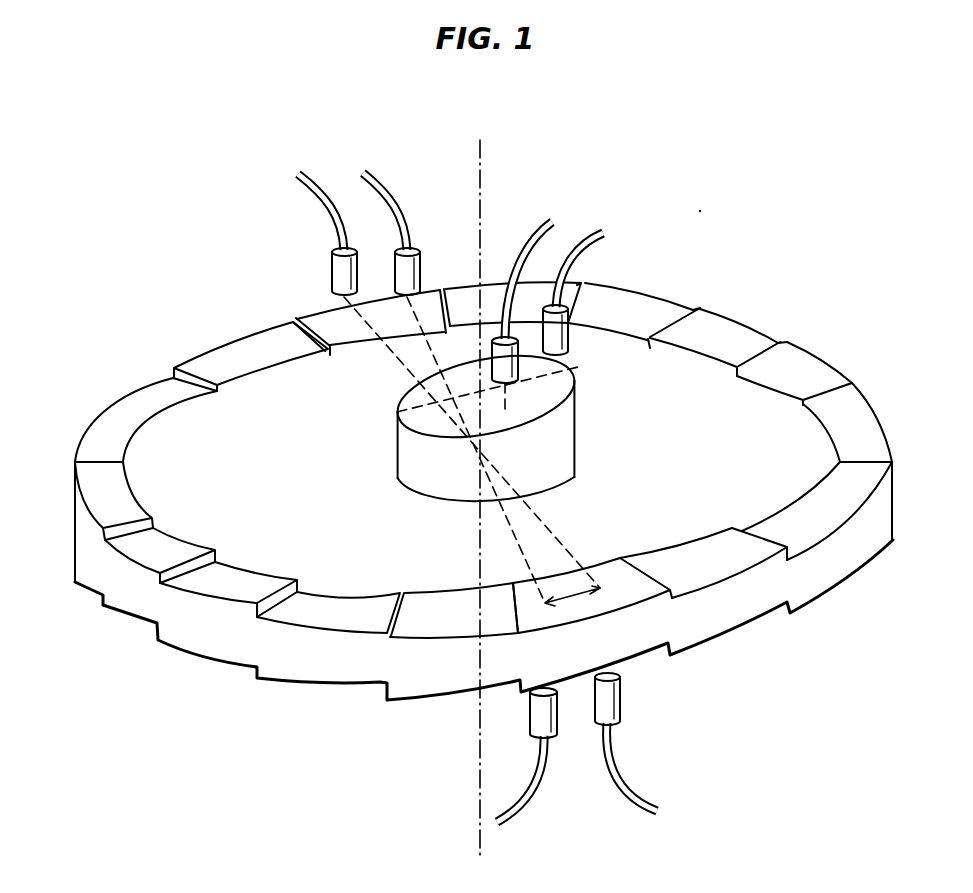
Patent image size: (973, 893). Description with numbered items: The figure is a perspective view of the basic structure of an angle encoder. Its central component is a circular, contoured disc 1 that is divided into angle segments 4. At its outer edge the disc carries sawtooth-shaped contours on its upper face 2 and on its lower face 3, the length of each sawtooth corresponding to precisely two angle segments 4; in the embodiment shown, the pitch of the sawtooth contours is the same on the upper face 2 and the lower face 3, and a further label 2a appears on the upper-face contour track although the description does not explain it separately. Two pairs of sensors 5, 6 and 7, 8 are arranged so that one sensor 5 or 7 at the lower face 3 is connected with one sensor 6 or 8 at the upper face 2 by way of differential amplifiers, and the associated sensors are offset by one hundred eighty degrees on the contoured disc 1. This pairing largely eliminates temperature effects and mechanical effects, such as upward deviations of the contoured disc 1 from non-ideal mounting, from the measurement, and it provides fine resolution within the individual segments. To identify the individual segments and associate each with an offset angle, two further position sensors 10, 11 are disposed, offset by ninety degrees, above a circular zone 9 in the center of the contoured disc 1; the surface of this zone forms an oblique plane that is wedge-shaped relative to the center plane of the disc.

The contoured disc 1 is at (866, 517).
The upper face 2 is at (587, 606).
The ring segment 2a is at (173, 378).
The lower face 3 is at (647, 655).
The angle segment 4 is at (585, 592).
The sensor 5 is at (617, 718).
The sensor 6 is at (336, 268).
The sensor 7 is at (540, 720).
The sensor 8 is at (420, 272).
The circular zone 9 is at (567, 420).
The position sensor 10 is at (537, 402).
The position sensor 11 is at (568, 348).